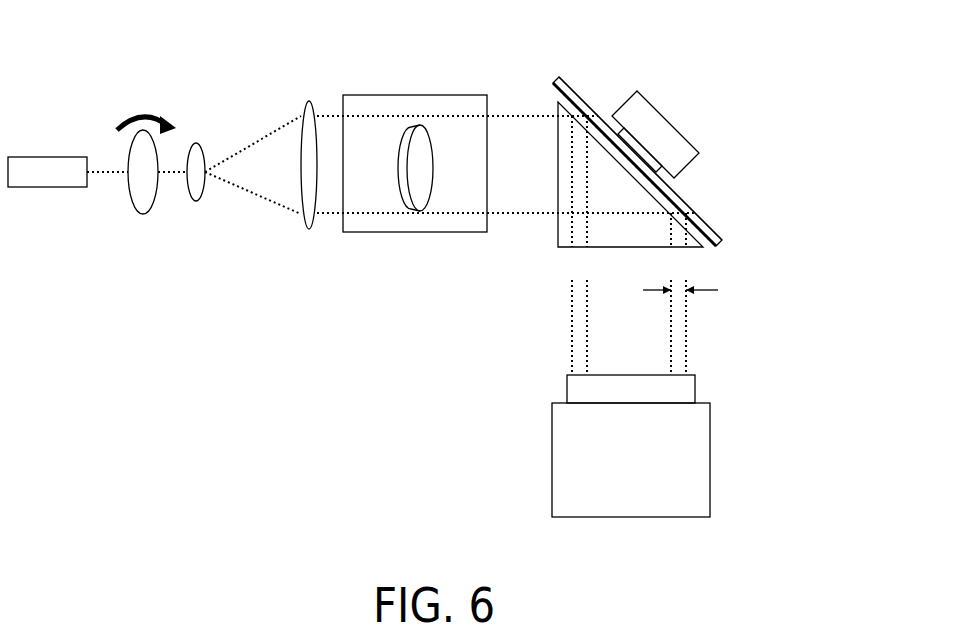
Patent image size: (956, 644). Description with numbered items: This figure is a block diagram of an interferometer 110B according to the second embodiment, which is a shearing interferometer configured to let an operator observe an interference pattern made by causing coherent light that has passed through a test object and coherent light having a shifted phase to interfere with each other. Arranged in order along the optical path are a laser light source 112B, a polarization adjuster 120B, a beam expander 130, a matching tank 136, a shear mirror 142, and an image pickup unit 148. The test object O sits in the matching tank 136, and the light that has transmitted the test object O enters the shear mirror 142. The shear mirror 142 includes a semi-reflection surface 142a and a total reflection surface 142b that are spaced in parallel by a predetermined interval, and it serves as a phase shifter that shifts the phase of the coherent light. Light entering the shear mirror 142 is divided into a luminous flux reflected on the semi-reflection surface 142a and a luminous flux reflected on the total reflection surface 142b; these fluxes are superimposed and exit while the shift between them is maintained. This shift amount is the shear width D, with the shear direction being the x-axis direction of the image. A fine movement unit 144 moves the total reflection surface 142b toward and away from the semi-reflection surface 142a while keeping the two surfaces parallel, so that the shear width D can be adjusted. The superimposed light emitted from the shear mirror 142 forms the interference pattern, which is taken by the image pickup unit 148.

The interferometer 110B is at (115, 36).
The laser light source 112B is at (45, 228).
The polarization adjuster 120B is at (162, 137).
The beam expander 130 is at (243, 180).
The matching tank 136 is at (419, 148).
The test object O is at (430, 193).
The shear mirror 142 is at (636, 189).
The semi-reflection surface 142a is at (633, 56).
The total reflection surface 142b is at (598, 110).
The fine movement unit 144 is at (716, 151).
The shear width D is at (715, 315).
The image pickup unit 148 is at (627, 463).